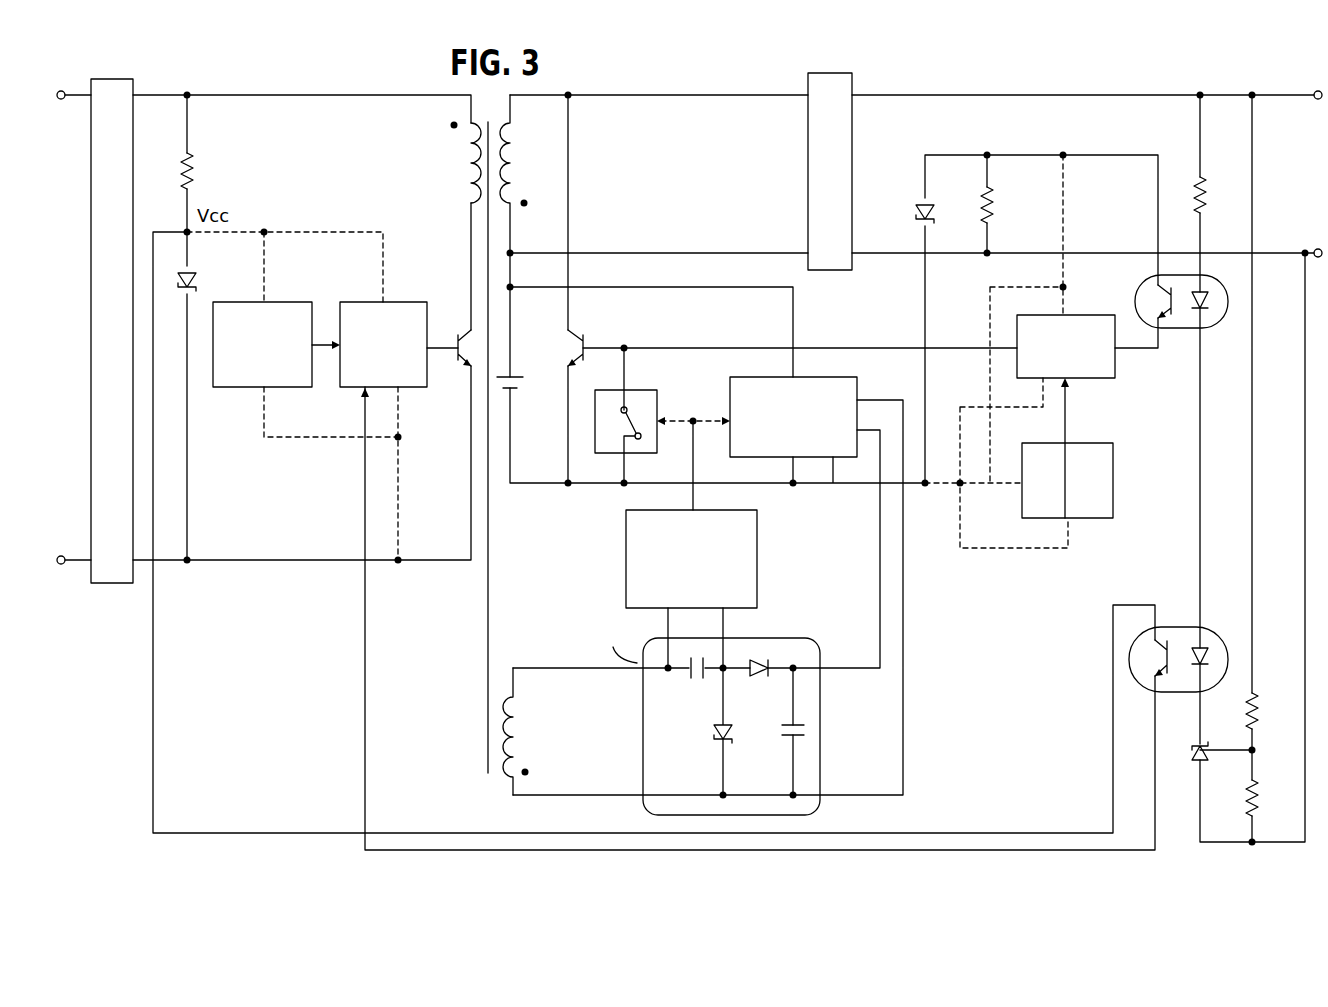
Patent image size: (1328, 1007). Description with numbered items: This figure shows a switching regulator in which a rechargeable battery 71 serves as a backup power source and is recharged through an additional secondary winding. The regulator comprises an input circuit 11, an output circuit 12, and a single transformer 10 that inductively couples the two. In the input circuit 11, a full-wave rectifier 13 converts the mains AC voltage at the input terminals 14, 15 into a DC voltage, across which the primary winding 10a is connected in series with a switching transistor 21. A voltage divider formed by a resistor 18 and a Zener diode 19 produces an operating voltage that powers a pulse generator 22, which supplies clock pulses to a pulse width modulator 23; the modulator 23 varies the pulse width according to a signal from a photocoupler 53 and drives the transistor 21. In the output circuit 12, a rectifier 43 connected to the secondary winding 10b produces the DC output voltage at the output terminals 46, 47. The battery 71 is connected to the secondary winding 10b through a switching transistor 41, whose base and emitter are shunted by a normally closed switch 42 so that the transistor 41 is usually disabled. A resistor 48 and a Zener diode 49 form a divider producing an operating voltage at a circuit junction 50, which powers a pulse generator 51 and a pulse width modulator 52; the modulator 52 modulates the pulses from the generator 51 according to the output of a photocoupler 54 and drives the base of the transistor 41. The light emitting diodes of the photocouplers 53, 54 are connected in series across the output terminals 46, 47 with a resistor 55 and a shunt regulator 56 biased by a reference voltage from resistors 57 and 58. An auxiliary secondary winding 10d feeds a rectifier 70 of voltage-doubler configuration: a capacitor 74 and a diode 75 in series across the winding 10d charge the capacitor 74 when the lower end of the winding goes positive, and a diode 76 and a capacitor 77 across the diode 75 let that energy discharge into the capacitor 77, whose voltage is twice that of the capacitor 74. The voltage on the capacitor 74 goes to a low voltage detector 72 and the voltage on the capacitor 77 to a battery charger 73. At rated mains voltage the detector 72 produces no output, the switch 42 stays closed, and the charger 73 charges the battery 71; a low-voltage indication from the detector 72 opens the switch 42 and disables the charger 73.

The transformer 10 is at (500, 113).
The primary winding 10a is at (470, 166).
The secondary winding 10b is at (514, 163).
The auxiliary secondary winding 10d is at (516, 736).
The input circuit 11 is at (374, 77).
The output circuit 12 is at (670, 77).
The full-wave rectifier 13 is at (113, 79).
The input terminal 14 is at (62, 91).
The input terminal 15 is at (62, 556).
The resistor 18 is at (191, 172).
The Zener diode 19 is at (192, 284).
The switching transistor 21 is at (464, 368).
The pulse generator 22 is at (287, 302).
The pulse width modulator 23 is at (409, 302).
The switching transistor 41 is at (587, 337).
The normally closed switch 42 is at (660, 407).
The rectifier 43 is at (826, 73).
The output terminal 46 is at (1318, 91).
The output terminal 47 is at (1318, 249).
The resistor 48 is at (991, 212).
The Zener diode 49 is at (928, 206).
The circuit junction 50 is at (988, 153).
The pulse generator 51 is at (1083, 443).
The pulse width modulator 52 is at (1086, 315).
The photocoupler 53 is at (1176, 627).
The photocoupler 54 is at (1182, 330).
The resistor 55 is at (1205, 198).
The shunt regulator 56 is at (1197, 754).
The resistor 57 is at (1258, 711).
The resistor 58 is at (1258, 799).
The rectifier 70 is at (822, 653).
The rechargeable battery 71 is at (517, 377).
The low voltage detector 72 is at (760, 551).
The battery charger 73 is at (835, 487).
The capacitor 74 is at (693, 682).
The diode 75 is at (718, 743).
The diode 76 is at (755, 682).
The capacitor 77 is at (787, 742).